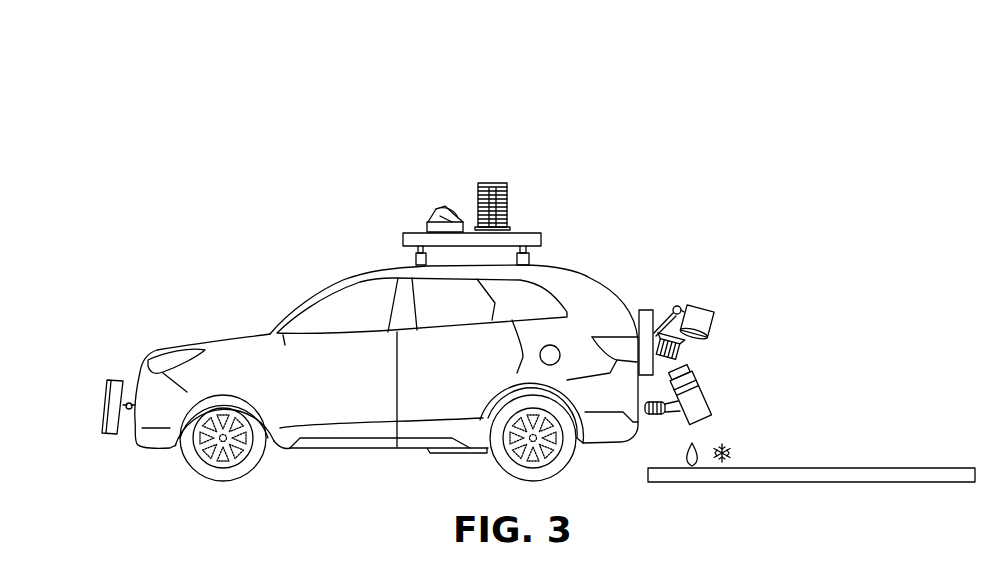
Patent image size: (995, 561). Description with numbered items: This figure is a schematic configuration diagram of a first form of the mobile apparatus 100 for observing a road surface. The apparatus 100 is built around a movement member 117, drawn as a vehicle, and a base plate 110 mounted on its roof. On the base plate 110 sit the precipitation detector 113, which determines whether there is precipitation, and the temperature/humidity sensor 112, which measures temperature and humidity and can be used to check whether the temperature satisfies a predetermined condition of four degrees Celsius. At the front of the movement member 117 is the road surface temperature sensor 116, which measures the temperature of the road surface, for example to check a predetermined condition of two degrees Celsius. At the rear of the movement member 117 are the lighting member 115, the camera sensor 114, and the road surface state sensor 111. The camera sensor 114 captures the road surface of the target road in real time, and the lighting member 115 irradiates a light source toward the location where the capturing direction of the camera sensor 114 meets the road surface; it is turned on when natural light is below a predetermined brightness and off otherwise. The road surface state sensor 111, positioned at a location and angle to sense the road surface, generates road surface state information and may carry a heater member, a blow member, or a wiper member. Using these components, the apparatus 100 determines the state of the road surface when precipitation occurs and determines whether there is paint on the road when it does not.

The mobile apparatus for observing a road surface 100 is at (483, 43).
The base plate 110 is at (541, 239).
The road surface state sensor 111 is at (712, 408).
The temperature/humidity sensor 112 is at (489, 182).
The precipitation detector 113 is at (432, 210).
The camera sensor 114 is at (681, 350).
The lighting member 115 is at (712, 315).
The road surface temperature sensor 116 is at (107, 407).
The movement member 117 is at (297, 300).